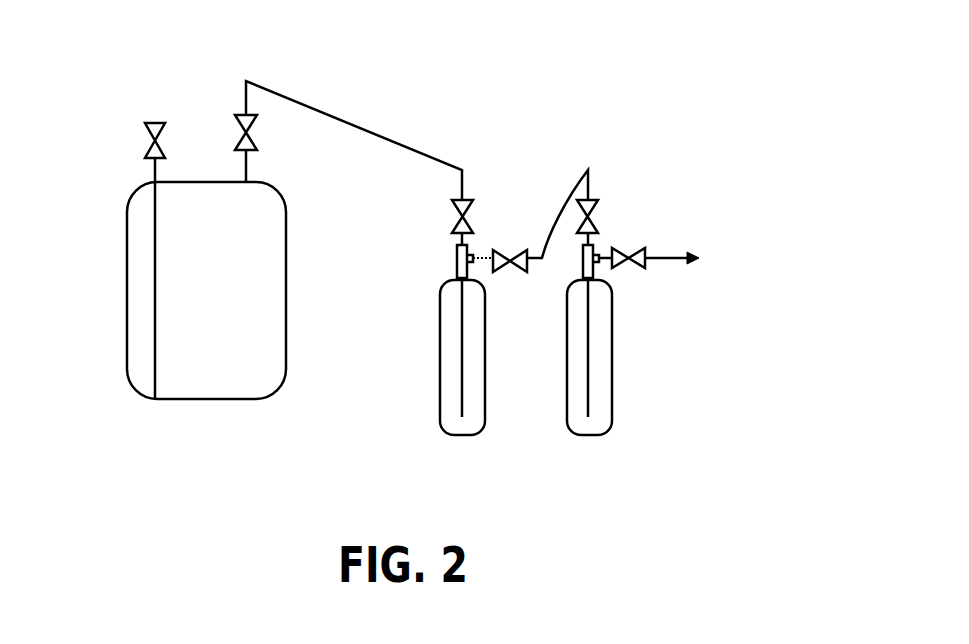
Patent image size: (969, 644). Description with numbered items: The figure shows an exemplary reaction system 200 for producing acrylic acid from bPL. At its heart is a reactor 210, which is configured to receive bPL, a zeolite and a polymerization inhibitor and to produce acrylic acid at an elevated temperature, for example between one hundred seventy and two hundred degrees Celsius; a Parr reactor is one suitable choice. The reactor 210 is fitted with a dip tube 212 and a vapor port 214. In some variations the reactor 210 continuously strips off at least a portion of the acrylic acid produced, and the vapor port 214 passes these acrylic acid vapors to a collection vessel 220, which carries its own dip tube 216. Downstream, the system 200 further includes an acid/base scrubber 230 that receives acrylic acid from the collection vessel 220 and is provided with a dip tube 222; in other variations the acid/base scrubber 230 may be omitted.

The system 200 is at (171, 50).
The reactor 210 is at (206, 290).
The dip tube 212 is at (155, 136).
The vapor port 214 is at (348, 140).
The dip tube 216 is at (487, 224).
The collection vessel 220 is at (462, 374).
The dip tube 222 is at (720, 251).
The acid/base scrubber 230 is at (589, 374).